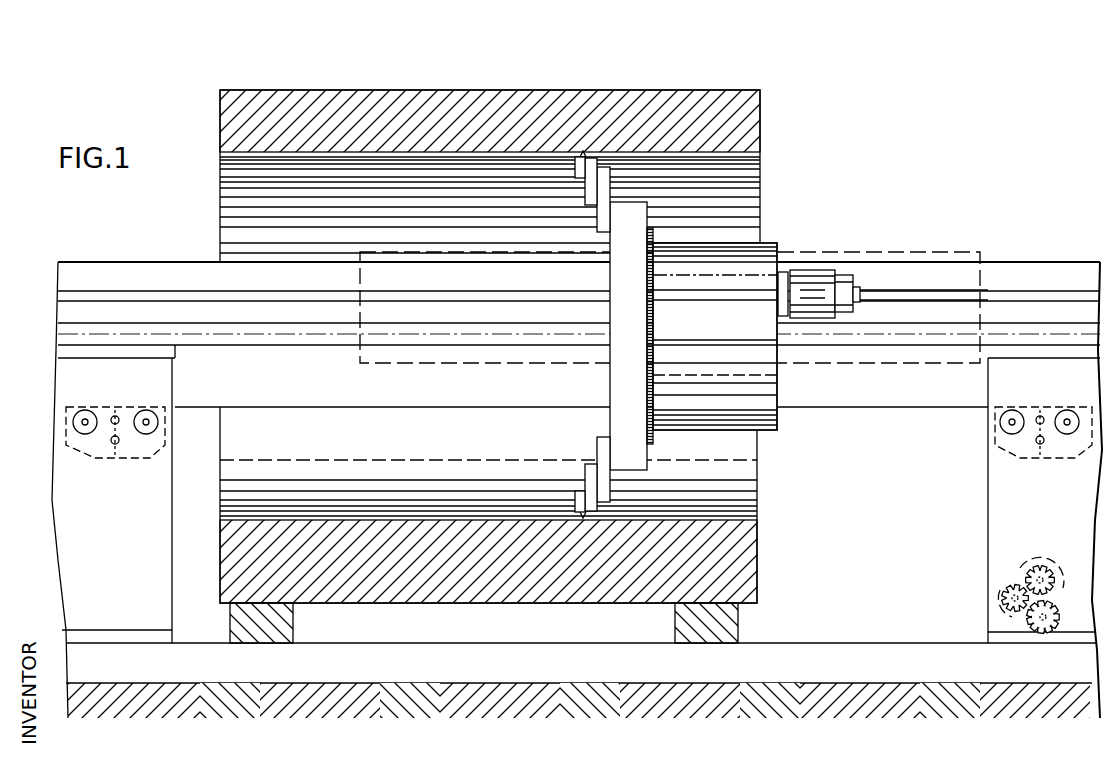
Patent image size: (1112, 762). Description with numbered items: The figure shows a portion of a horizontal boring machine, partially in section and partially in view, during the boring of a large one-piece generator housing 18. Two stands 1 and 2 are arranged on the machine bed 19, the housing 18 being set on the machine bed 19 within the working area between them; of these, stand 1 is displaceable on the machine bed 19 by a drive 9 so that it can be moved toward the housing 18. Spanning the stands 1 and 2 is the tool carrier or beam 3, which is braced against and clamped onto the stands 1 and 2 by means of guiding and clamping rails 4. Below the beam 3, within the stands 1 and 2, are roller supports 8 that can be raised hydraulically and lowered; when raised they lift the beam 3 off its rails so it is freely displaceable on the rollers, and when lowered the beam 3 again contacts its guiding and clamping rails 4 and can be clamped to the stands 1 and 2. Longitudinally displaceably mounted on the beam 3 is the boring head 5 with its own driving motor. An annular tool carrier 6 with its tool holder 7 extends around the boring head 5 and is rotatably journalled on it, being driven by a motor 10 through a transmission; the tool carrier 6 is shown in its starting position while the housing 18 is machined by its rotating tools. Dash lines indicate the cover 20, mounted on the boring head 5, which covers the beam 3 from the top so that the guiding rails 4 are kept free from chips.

The stand 1 is at (995, 495).
The stand 2 is at (65, 515).
The tool carrier 3 is at (812, 393).
The guiding and clamping rails 4 is at (1010, 291).
The boring head 5 is at (748, 262).
The annular tool carrier 6 is at (636, 214).
The tool holder 7 is at (587, 195).
The roller support 8 is at (158, 448).
The drive 9 is at (1012, 578).
The motor 10 is at (810, 275).
The housing 18 is at (752, 118).
The machine bed 19 is at (795, 643).
The cover 20 is at (915, 255).